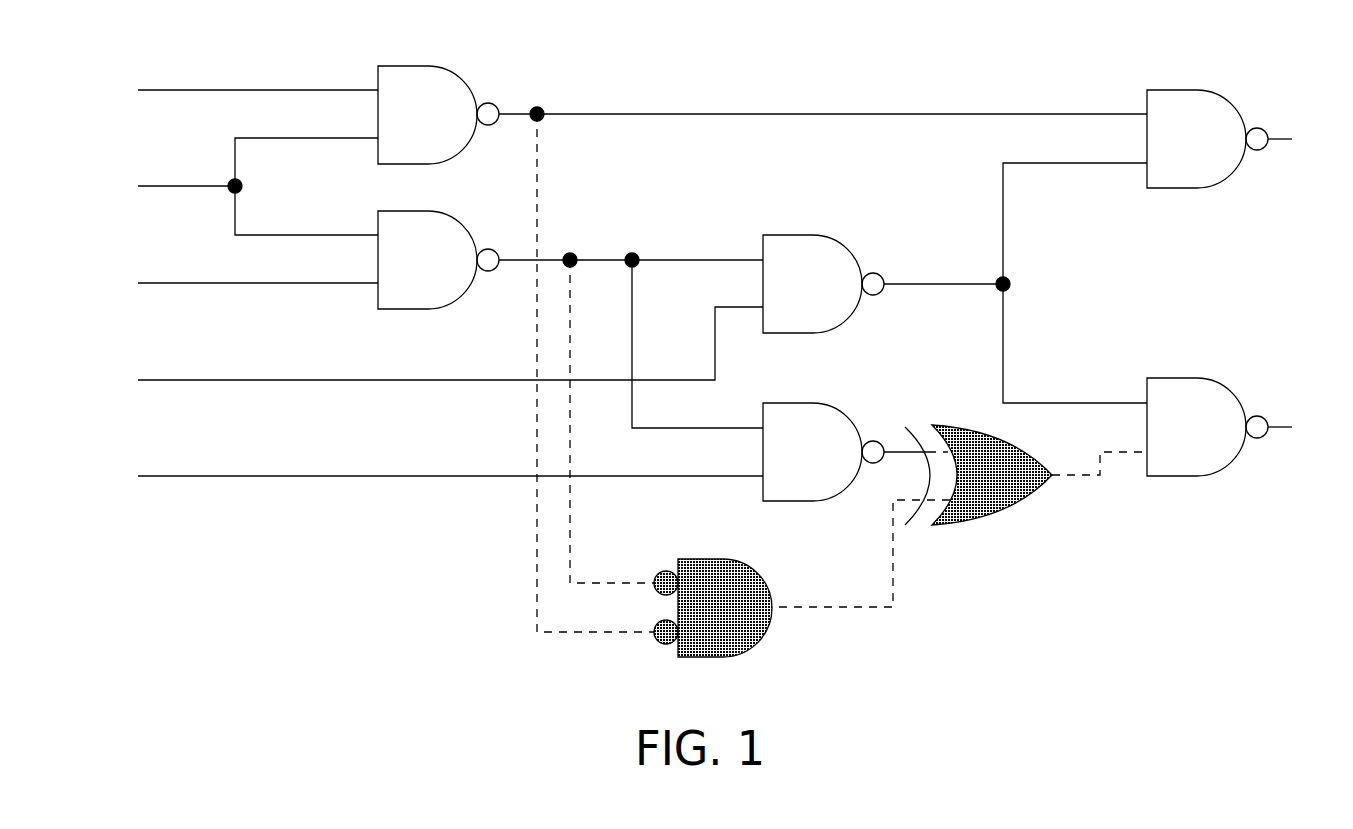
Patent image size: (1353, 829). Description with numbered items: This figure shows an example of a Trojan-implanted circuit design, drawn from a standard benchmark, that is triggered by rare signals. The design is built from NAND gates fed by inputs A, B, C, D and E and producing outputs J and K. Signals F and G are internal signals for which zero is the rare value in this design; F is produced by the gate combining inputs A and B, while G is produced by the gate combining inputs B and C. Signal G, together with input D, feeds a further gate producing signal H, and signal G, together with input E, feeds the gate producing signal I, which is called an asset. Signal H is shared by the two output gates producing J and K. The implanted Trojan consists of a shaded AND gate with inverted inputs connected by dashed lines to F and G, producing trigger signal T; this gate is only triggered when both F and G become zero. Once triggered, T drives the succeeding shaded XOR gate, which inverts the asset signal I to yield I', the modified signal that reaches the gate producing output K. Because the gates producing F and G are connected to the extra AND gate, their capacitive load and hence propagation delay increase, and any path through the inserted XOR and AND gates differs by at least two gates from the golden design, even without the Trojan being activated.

The input signal A is at (241, 78).
The input signal B is at (241, 186).
The input signal C is at (240, 272).
The input signal D is at (433, 349).
The input signal E is at (433, 466).
The signal F is at (823, 341).
The signal G is at (631, 394).
The internal signal H is at (1015, 283).
The asset signal I is at (912, 495).
The inverted asset signal I' is at (1099, 447).
The output signal J is at (1297, 139).
The output signal K is at (1304, 416).
The Trojan trigger signal T is at (743, 604).